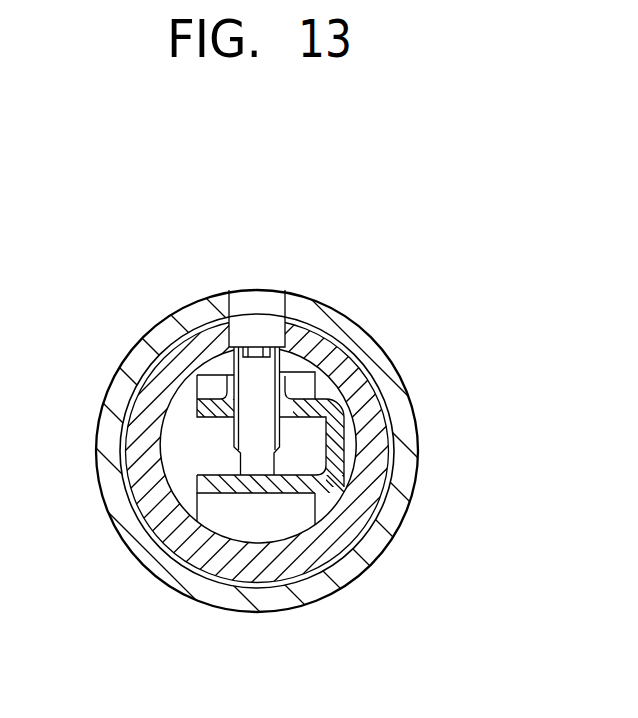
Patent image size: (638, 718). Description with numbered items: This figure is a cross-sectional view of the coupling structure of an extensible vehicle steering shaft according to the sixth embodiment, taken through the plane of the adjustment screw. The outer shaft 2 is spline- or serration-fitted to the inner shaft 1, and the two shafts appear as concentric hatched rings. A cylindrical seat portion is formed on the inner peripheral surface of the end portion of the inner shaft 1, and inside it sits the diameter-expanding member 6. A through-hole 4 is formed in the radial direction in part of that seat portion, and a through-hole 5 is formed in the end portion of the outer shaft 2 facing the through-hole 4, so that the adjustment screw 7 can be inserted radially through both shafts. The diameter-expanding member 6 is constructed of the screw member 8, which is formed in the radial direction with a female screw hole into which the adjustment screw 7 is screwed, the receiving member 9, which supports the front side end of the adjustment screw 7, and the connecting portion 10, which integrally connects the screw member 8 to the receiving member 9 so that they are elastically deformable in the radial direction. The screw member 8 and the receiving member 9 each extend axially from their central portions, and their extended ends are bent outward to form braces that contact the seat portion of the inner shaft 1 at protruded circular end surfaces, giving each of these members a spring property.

The inner shaft 1 is at (266, 555).
The outer shaft 2 is at (347, 341).
The through-hole 4 is at (248, 334).
The through-hole 5 is at (241, 302).
The diameter-expanding member 6 is at (178, 450).
The adjustment screw 7 is at (262, 380).
The screw member 8 is at (205, 416).
The receiving member 9 is at (252, 485).
The connecting portion 10 is at (333, 455).